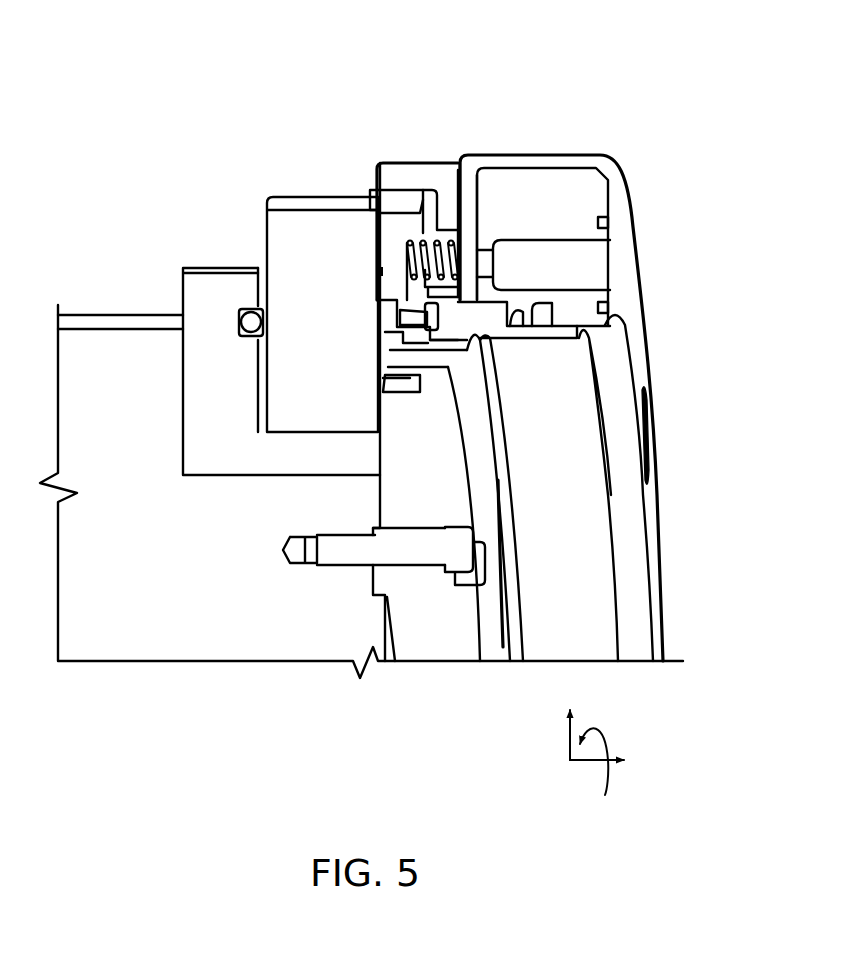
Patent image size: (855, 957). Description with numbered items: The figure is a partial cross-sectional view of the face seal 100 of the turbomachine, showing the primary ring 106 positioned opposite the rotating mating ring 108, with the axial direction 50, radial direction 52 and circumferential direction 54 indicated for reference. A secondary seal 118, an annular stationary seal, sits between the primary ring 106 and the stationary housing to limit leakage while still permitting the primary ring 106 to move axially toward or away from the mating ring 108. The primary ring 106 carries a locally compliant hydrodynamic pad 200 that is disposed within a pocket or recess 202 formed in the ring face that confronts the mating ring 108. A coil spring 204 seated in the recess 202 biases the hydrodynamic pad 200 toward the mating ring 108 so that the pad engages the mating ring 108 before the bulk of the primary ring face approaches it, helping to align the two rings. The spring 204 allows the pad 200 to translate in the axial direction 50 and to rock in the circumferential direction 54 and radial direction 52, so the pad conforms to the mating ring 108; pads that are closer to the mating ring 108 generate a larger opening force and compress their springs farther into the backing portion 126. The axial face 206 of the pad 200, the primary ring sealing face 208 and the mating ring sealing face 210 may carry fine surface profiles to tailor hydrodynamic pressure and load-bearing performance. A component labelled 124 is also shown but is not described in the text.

The face seal 100 is at (312, 86).
The primary ring 106 is at (547, 347).
The mating ring 108 is at (281, 306).
The secondary seal 118 is at (541, 313).
The housing cover 124 is at (453, 146).
The backing portion 126 is at (523, 185).
The locally compliant hydrodynamic pad 200 is at (371, 221).
The pocket or recess 202 is at (405, 207).
The spring 204 is at (420, 220).
The axial face 206 is at (379, 268).
The primary ring sealing face 208 is at (378, 312).
The mating ring sealing face 210 is at (376, 268).
The axial direction 50 is at (580, 765).
The radial direction 52 is at (566, 742).
The circumferential direction 54 is at (600, 748).